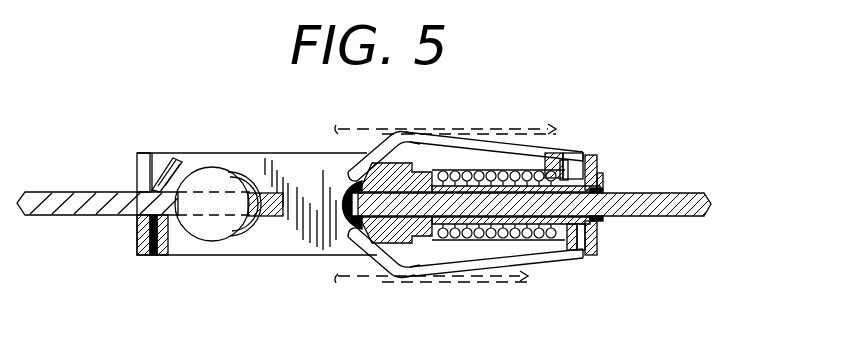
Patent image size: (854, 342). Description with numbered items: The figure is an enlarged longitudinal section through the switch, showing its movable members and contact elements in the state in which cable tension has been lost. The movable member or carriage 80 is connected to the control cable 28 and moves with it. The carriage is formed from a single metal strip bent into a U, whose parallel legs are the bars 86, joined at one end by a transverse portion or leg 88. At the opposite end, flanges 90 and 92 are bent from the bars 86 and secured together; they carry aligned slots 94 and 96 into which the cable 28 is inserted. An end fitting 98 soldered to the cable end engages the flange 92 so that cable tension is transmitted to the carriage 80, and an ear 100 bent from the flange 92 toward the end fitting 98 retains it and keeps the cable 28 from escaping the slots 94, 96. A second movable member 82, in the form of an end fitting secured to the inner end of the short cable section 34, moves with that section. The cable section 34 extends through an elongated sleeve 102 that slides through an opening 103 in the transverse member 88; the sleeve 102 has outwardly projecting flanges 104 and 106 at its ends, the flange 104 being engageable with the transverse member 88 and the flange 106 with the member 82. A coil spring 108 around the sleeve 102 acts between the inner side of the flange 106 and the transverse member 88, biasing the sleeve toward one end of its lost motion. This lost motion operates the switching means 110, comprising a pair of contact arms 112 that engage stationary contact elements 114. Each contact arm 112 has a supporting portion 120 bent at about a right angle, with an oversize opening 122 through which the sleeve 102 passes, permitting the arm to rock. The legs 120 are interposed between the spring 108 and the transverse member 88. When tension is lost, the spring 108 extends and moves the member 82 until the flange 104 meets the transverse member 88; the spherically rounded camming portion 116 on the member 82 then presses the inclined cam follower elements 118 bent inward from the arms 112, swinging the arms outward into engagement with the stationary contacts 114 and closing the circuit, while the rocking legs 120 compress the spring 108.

The control cable 28 is at (72, 192).
The short cable section 34 is at (673, 194).
The carriage 80 is at (232, 146).
The second movable member 82 is at (405, 170).
The bars 86 is at (270, 160).
The transverse member 88 is at (590, 155).
The flange 90 is at (140, 237).
The flange 92 is at (162, 250).
The slot 94 is at (144, 160).
The slot 96 is at (152, 170).
The end fitting 98 is at (206, 165).
The ear 100 is at (163, 180).
The sleeve 102 is at (565, 156).
The opening 103 is at (607, 192).
The flange 104 is at (607, 243).
The flange 106 is at (437, 242).
The coil spring 108 is at (493, 170).
The switching means 110 is at (357, 147).
The contact arms 112 is at (440, 142).
The stationary contact elements 114 is at (462, 134).
The camming portion 116 is at (358, 238).
The cam follower elements 118 is at (361, 150).
The supporting portion 120 is at (583, 255).
The opening 122 is at (588, 206).